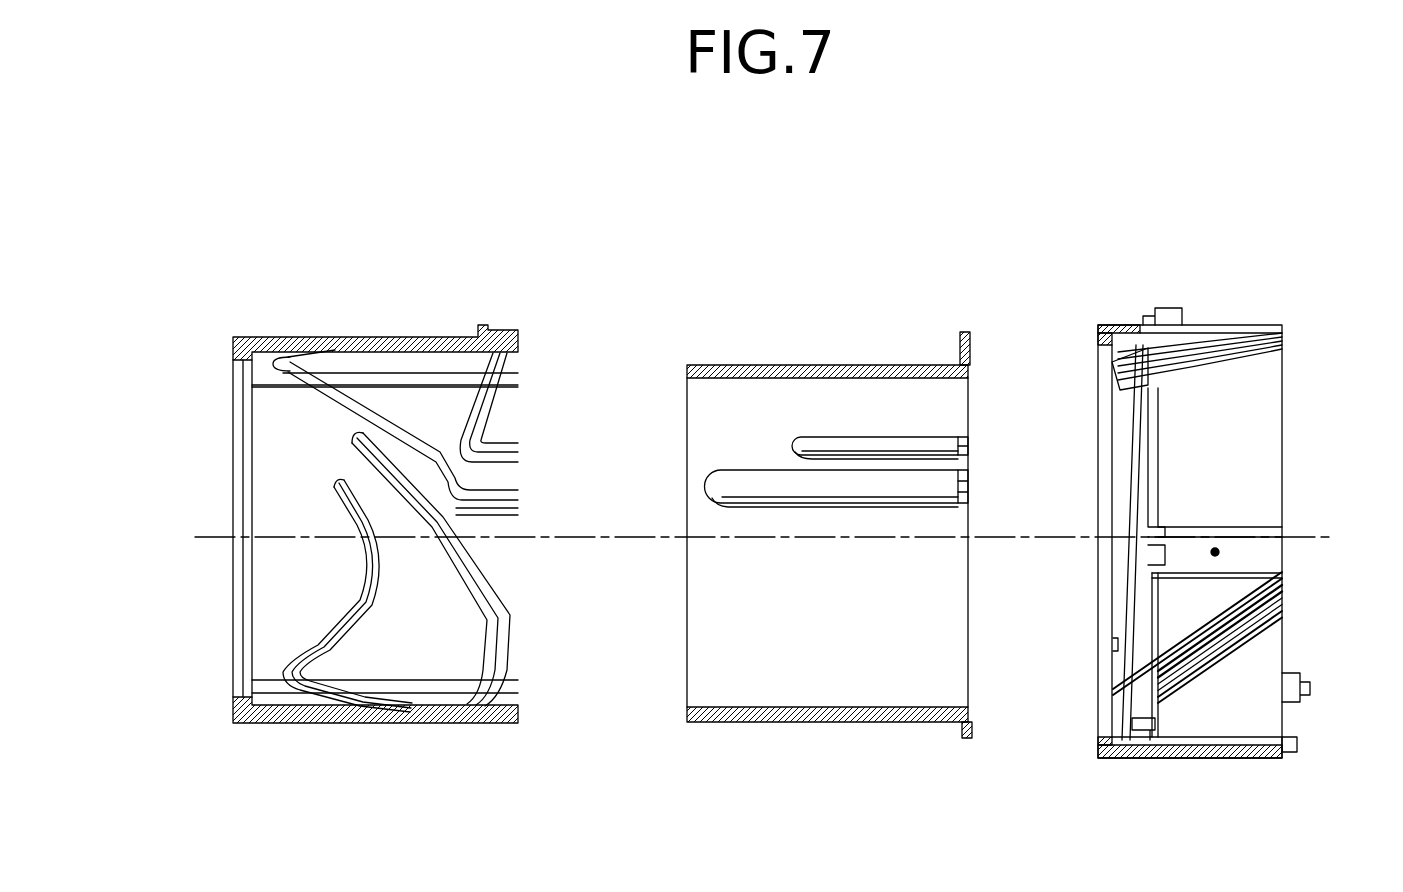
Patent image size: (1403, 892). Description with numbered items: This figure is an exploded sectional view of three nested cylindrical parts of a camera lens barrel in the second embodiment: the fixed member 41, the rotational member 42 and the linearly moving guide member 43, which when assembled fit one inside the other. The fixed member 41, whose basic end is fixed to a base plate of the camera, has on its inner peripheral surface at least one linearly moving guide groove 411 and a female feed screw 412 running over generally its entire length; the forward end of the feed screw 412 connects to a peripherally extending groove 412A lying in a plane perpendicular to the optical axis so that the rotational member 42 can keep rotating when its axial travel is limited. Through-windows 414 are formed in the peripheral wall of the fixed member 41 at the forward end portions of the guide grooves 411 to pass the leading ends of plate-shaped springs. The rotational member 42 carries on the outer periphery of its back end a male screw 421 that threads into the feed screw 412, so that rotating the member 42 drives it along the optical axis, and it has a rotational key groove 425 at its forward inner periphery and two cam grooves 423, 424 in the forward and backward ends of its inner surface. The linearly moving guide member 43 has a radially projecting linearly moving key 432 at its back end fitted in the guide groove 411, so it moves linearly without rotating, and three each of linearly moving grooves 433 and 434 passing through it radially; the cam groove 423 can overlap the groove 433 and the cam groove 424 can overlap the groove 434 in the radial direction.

The fixed member 41 is at (1222, 322).
The linearly moving guide groove 411 is at (1215, 556).
The female feed screw 412 is at (1284, 743).
The peripherally extending groove 412A is at (1131, 445).
The through-window 414 is at (1195, 537).
The rotational member 42 is at (373, 332).
The male screw 421 is at (483, 325).
The cam groove 423 is at (340, 640).
The cam groove 424 is at (503, 705).
The rotational key groove 425 is at (252, 442).
The linearly moving guide member 43 is at (742, 363).
The linearly moving key 432 is at (963, 330).
The linearly moving groove 433 is at (766, 468).
The linearly moving groove 434 is at (875, 437).